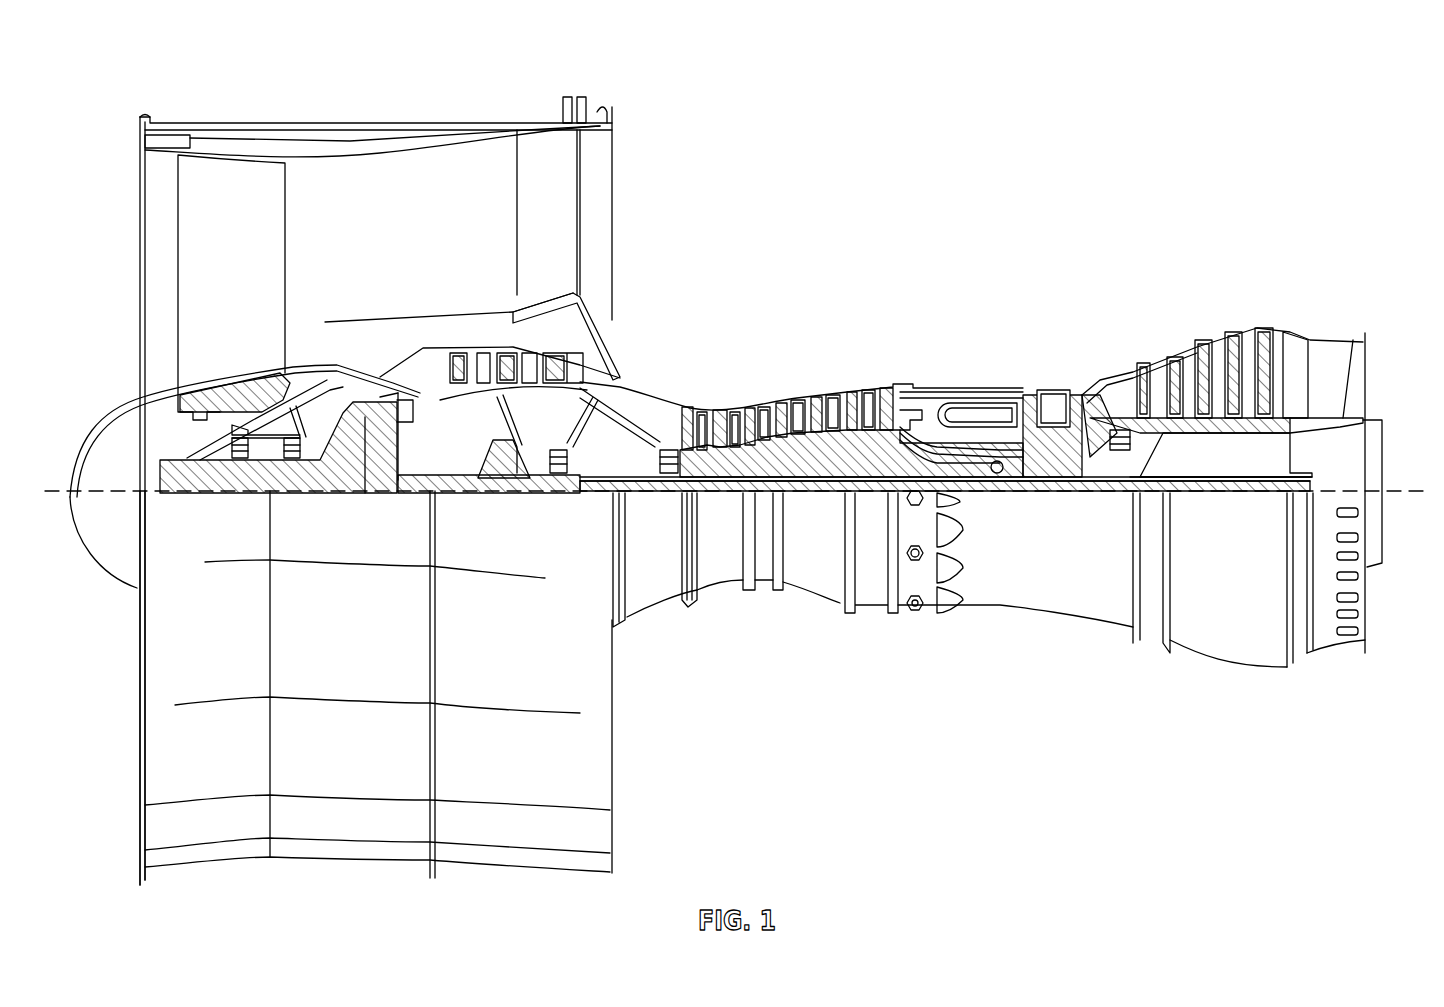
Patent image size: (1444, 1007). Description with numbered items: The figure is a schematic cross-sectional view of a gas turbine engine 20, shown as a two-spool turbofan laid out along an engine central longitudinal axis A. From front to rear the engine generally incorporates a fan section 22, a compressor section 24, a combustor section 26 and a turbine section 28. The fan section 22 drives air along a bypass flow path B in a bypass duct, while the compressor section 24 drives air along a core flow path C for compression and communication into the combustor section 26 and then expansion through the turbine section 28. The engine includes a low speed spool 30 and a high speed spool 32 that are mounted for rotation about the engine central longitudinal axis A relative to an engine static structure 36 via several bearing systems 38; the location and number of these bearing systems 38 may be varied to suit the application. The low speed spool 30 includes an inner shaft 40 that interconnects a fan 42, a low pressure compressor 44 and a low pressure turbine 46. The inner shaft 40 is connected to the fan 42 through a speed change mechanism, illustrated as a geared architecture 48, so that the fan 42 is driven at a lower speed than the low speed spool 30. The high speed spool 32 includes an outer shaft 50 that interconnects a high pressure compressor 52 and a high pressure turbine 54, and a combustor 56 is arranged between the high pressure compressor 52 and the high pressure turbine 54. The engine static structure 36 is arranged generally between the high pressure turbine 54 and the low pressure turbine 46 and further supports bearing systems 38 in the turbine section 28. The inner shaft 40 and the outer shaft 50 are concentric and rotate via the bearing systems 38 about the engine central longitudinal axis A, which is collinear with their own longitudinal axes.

The gas turbine engine 20 is at (1187, 164).
The fan section 22 is at (247, 117).
The compressor section 24 is at (804, 352).
The combustor section 26 is at (964, 352).
The turbine section 28 is at (1118, 332).
The low speed spool 30 is at (837, 493).
The high speed spool 32 is at (903, 425).
The engine static structure 36 is at (877, 605).
The bearing systems 38 is at (241, 461).
The inner shaft 40 is at (627, 493).
The fan 42 is at (257, 253).
The low pressure compressor 44 is at (531, 371).
The low pressure turbine 46 is at (1221, 348).
The geared architecture 48 is at (387, 470).
The outer shaft 50 is at (1005, 472).
The high pressure compressor 52 is at (794, 458).
The high pressure turbine 54 is at (1055, 388).
The combustor 56 is at (978, 408).
The engine central longitudinal axis A is at (1386, 490).
The bypass flow path B is at (463, 223).
The core flow path C is at (336, 353).